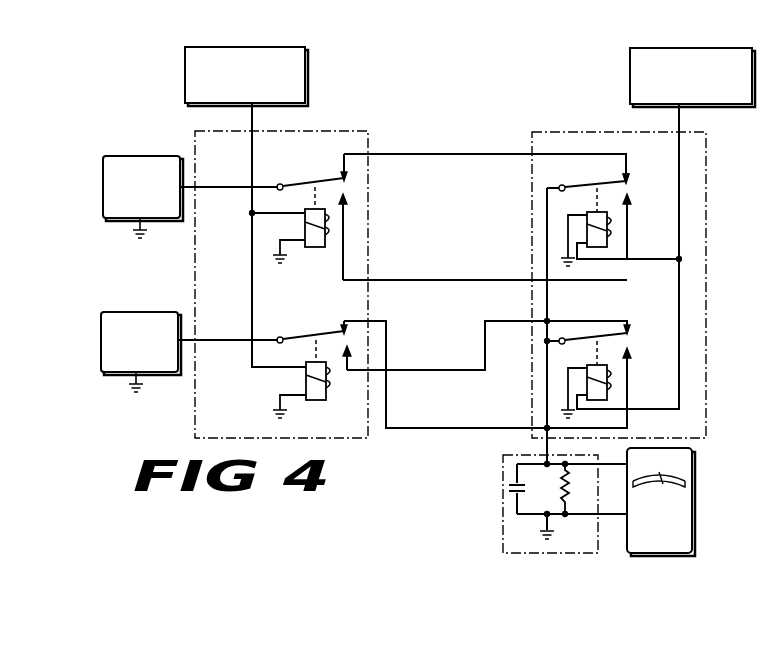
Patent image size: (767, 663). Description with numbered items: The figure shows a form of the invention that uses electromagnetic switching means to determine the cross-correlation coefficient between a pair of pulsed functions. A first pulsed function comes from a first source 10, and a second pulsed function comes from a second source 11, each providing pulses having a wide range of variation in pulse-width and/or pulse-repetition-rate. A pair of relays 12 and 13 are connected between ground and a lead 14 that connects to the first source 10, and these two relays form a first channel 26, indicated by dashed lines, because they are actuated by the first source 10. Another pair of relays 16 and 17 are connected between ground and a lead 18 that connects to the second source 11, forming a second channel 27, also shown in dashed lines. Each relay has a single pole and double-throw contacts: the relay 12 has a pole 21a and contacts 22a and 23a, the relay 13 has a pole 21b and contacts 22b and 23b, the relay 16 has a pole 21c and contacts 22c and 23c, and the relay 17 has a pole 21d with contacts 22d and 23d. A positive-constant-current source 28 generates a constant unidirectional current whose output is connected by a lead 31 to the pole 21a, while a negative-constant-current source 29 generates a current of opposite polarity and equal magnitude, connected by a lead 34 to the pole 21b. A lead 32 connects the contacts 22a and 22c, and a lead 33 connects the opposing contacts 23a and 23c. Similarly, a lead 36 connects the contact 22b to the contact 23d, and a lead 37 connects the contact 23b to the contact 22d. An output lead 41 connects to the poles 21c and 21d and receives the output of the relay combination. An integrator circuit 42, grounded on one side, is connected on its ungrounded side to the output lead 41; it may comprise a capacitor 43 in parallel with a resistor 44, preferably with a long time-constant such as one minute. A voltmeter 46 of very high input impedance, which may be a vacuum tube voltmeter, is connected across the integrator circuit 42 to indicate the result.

The first source of pulses 10 is at (268, 47).
The second source of pulses 11 is at (722, 48).
The relay 12 is at (312, 247).
The relay 13 is at (316, 400).
The lead 14 is at (252, 268).
The relay 16 is at (609, 255).
The relay 17 is at (584, 368).
The lead 18 is at (680, 306).
The pole 21a is at (281, 184).
The pole 21b is at (313, 338).
The pole 21c is at (608, 188).
The pole 21d is at (599, 330).
The relay contact 22a is at (339, 177).
The relay contact 22b is at (339, 327).
The relay contact 22c is at (635, 172).
The relay contact 22d is at (648, 335).
The relay contact 23a is at (354, 198).
The relay contact 23b is at (348, 366).
The relay contact 23c is at (628, 208).
The relay contact 23d is at (628, 358).
The first channel 26 is at (326, 137).
The second channel 27 is at (616, 132).
The positive-constant-current source 28 is at (103, 188).
The negative-constant-current source 29 is at (101, 347).
The lead 31 is at (238, 187).
The lead 32 is at (490, 157).
The lead 33 is at (461, 281).
The lead 34 is at (241, 340).
The lead 36 is at (448, 426).
The lead 37 is at (448, 371).
The output lead 41 is at (546, 300).
The integrator circuit 42 is at (550, 495).
The capacitor 43 is at (506, 494).
The resistor 44 is at (588, 485).
The voltmeter 46 is at (692, 522).